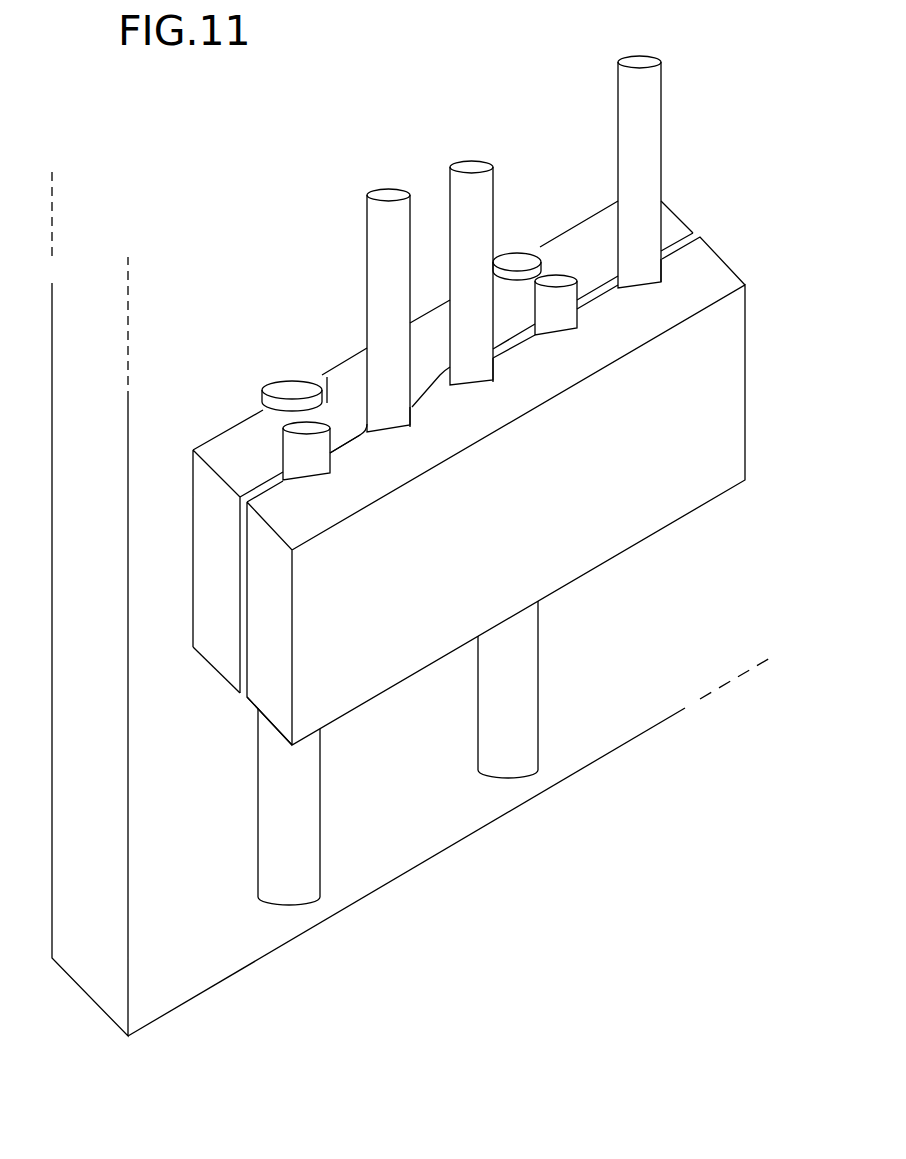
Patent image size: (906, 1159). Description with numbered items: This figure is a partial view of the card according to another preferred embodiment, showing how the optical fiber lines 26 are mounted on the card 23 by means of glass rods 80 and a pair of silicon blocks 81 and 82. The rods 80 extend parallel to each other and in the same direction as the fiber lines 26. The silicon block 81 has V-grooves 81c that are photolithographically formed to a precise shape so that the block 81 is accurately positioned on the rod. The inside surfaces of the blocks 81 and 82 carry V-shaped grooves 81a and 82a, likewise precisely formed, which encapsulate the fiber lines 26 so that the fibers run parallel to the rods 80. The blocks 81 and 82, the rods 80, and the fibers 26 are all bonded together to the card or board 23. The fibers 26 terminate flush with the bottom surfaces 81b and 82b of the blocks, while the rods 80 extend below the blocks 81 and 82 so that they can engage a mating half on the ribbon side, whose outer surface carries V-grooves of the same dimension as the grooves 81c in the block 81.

The card 23 is at (188, 933).
The optical fiber lines 26 is at (467, 203).
The glass rods 80 is at (510, 260).
The silicon block 81 is at (210, 542).
The V-shaped groove 81a is at (280, 468).
The bottom surface 81b is at (213, 668).
The V-grooves 81c is at (507, 280).
The silicon block 82 is at (277, 683).
The V-shaped groove 82a is at (300, 490).
The bottom surface 82b is at (278, 738).